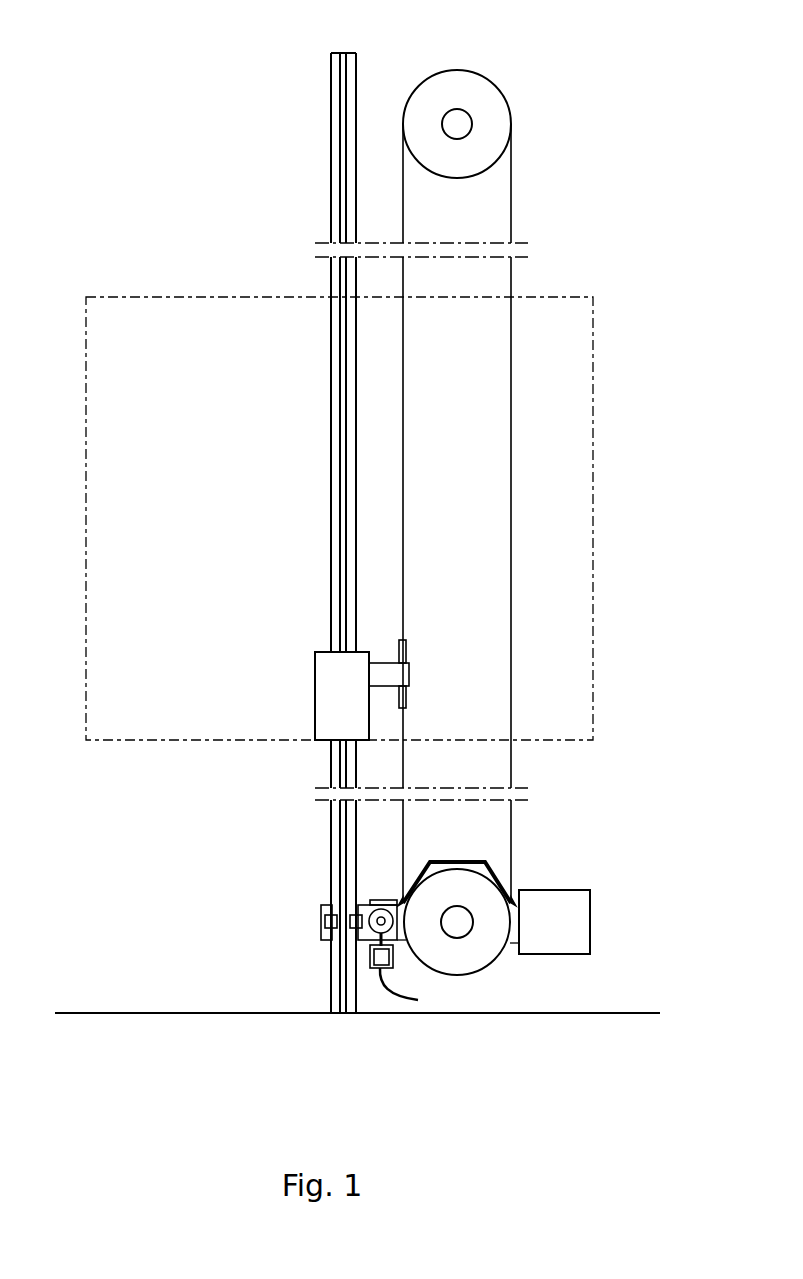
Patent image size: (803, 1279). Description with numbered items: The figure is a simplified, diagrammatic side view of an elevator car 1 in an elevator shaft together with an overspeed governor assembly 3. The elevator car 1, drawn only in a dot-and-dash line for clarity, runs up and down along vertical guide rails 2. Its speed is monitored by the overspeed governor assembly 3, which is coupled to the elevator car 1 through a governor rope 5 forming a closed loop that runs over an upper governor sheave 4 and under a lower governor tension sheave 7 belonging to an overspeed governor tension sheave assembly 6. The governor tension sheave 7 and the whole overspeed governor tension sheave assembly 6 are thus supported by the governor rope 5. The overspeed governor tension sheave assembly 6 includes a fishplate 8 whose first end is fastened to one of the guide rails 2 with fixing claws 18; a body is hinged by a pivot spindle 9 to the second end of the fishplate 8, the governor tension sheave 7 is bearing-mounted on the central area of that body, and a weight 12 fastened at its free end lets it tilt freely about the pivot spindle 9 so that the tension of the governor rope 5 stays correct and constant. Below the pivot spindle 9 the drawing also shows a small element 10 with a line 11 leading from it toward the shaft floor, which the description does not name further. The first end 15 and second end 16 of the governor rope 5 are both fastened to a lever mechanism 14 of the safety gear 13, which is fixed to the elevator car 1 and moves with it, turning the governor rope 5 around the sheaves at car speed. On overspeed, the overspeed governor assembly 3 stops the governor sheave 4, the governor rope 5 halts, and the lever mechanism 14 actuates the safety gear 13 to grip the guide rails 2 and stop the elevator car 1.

The elevator car 1 is at (121, 297).
The guide rails 2 is at (331, 83).
The overspeed governor assembly 3 is at (561, 90).
The governor sheave 4 is at (457, 78).
The governor rope 5 is at (512, 198).
The overspeed governor tension sheave assembly 6 is at (571, 866).
The governor tension sheave 7 is at (480, 963).
The fishplate 8 is at (324, 905).
The pivot spindle 9 is at (381, 908).
The evaluation unit 10 is at (375, 956).
The cable 11 is at (396, 1013).
The weight 12 is at (583, 920).
The safety gear 13 is at (325, 690).
The lever mechanism 14 is at (379, 669).
The first end 15 is at (407, 649).
The second end 16 is at (406, 701).
The fixing claws 18 is at (325, 919).